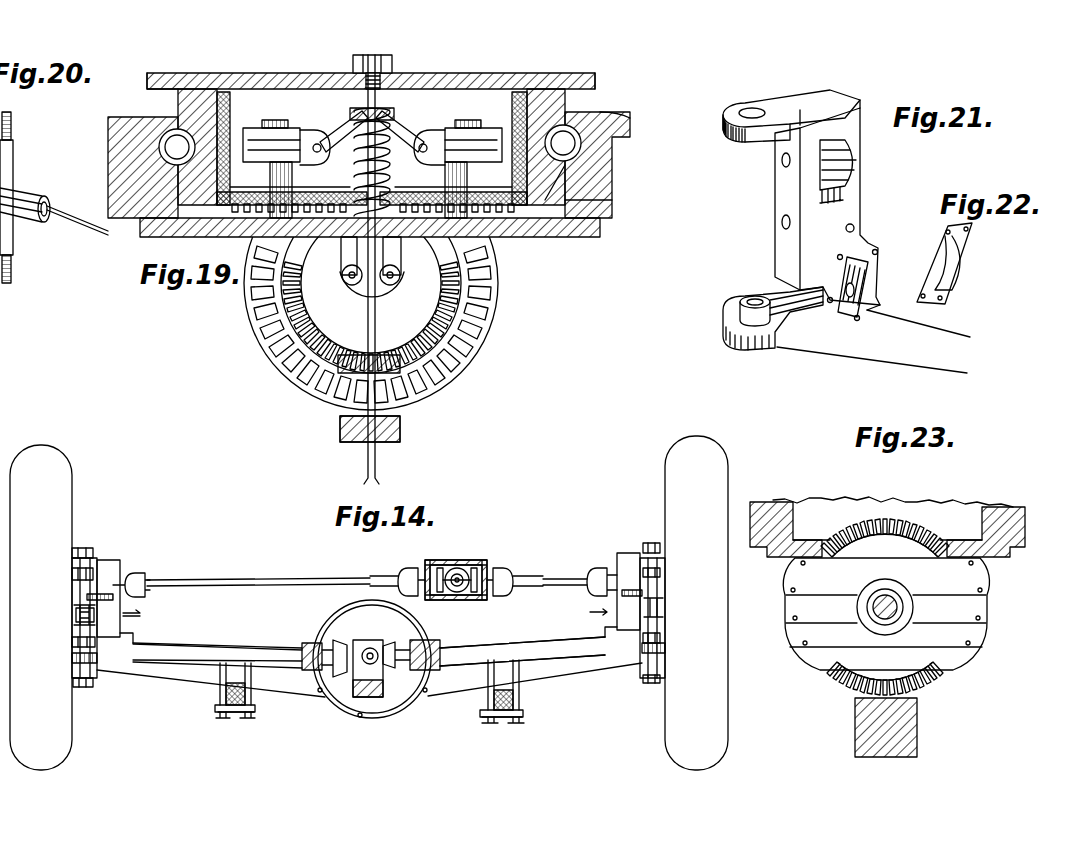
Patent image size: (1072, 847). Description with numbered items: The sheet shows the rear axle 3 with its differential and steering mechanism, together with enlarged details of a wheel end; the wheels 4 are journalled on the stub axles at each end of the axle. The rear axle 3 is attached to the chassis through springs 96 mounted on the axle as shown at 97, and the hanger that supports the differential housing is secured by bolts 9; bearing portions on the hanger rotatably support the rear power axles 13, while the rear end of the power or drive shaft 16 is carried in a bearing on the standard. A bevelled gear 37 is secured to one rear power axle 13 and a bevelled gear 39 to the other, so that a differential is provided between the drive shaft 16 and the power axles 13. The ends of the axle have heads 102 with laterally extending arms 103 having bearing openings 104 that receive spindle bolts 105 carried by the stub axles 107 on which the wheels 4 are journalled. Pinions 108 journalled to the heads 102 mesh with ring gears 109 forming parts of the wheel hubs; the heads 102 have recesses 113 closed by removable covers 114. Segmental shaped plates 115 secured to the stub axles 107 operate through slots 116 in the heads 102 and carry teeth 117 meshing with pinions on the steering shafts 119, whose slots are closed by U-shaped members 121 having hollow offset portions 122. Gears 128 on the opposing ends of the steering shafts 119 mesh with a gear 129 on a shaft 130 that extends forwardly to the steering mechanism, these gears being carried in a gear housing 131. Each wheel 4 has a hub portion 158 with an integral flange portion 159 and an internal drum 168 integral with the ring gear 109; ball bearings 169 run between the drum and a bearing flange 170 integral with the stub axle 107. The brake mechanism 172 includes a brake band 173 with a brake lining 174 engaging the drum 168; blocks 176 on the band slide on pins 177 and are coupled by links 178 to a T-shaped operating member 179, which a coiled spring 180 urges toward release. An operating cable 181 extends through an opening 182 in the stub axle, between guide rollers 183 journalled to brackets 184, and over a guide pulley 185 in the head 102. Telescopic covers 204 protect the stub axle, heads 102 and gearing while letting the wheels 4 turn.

In FIG. 14, the rear axle 3 is at (596, 672).
In FIG. 14, the wheel 4 is at (667, 490).
In FIG. 14, the bolts 9 is at (242, 712).
In FIG. 14, the rear power axles 13 is at (510, 647).
In FIG. 14, the power or drive shaft 16 is at (372, 650).
In FIG. 14, the bevelled gear 37 is at (397, 643).
In FIG. 14, the bevelled gear 39 is at (333, 637).
In FIG. 14, the springs 96 is at (501, 718).
In FIG. 14, the spring mounting 97 is at (525, 705).
In FIG. 19, the heads 102 is at (402, 428).
In FIG. 21, the heads 102 is at (860, 193).
In FIG. 14, the heads 102 is at (627, 562).
In FIG. 21, the laterally extending arms 103 is at (785, 340).
In FIG. 21, the bearing openings 104 is at (754, 292).
In FIG. 14, the spindle bolts 105 is at (642, 545).
In FIG. 19, the stub axles 107 is at (560, 237).
In FIG. 23, the pinions 108 is at (837, 684).
In FIG. 14, the pinions 108 is at (645, 656).
In FIG. 19, the ring gears 109 is at (608, 208).
In FIG. 21, the recesses 113 is at (868, 263).
In FIG. 22, the removable covers 114 is at (975, 247).
In FIG. 19, the segmental shaped plates 115 is at (256, 328).
In FIG. 14, the segmental shaped plates 115 is at (620, 595).
In FIG. 19, the slots 116 is at (340, 422).
In FIG. 19, the teeth 117 is at (258, 340).
In FIG. 14, the steering shafts 119 is at (570, 578).
In FIG. 21, the U-shaped members 121 is at (838, 122).
In FIG. 21, the hollow offset portions 122 is at (852, 167).
In FIG. 14, the gears 128 is at (497, 563).
In FIG. 14, the gear 129 is at (458, 600).
In FIG. 14, the shaft 130 is at (457, 570).
In FIG. 14, the gear housing 131 is at (477, 562).
In FIG. 19, the hub portion 158 is at (470, 80).
In FIG. 19, the flange portion 159 is at (190, 78).
In FIG. 19, the internal drum 168 is at (614, 186).
In FIG. 19, the ball bearings 169 is at (610, 152).
In FIG. 19, the bearing flange 170 is at (632, 130).
In FIG. 19, the brake mechanism 172 is at (252, 118).
In FIG. 19, the brake band 173 is at (488, 105).
In FIG. 19, the brake lining 174 is at (548, 95).
In FIG. 19, the blocks 176 is at (300, 162).
In FIG. 19, the pins 177 is at (480, 213).
In FIG. 19, the links 178 is at (342, 130).
In FIG. 20, the T-shaped operating member 179 is at (15, 157).
In FIG. 19, the T-shaped operating member 179 is at (402, 130).
In FIG. 19, the coiled spring 180 is at (425, 165).
In FIG. 20, the operating cable 181 is at (82, 232).
In FIG. 19, the operating cable 181 is at (380, 464).
In FIG. 14, the operating cable 181 is at (607, 612).
In FIG. 19, the opening 182 is at (472, 248).
In FIG. 19, the guide rollers 183 is at (440, 300).
In FIG. 19, the brackets 184 is at (340, 252).
In FIG. 14, the brackets 184 is at (90, 622).
In FIG. 14, the guide pulley 185 is at (658, 610).
In FIG. 23, the covers 204 is at (984, 593).